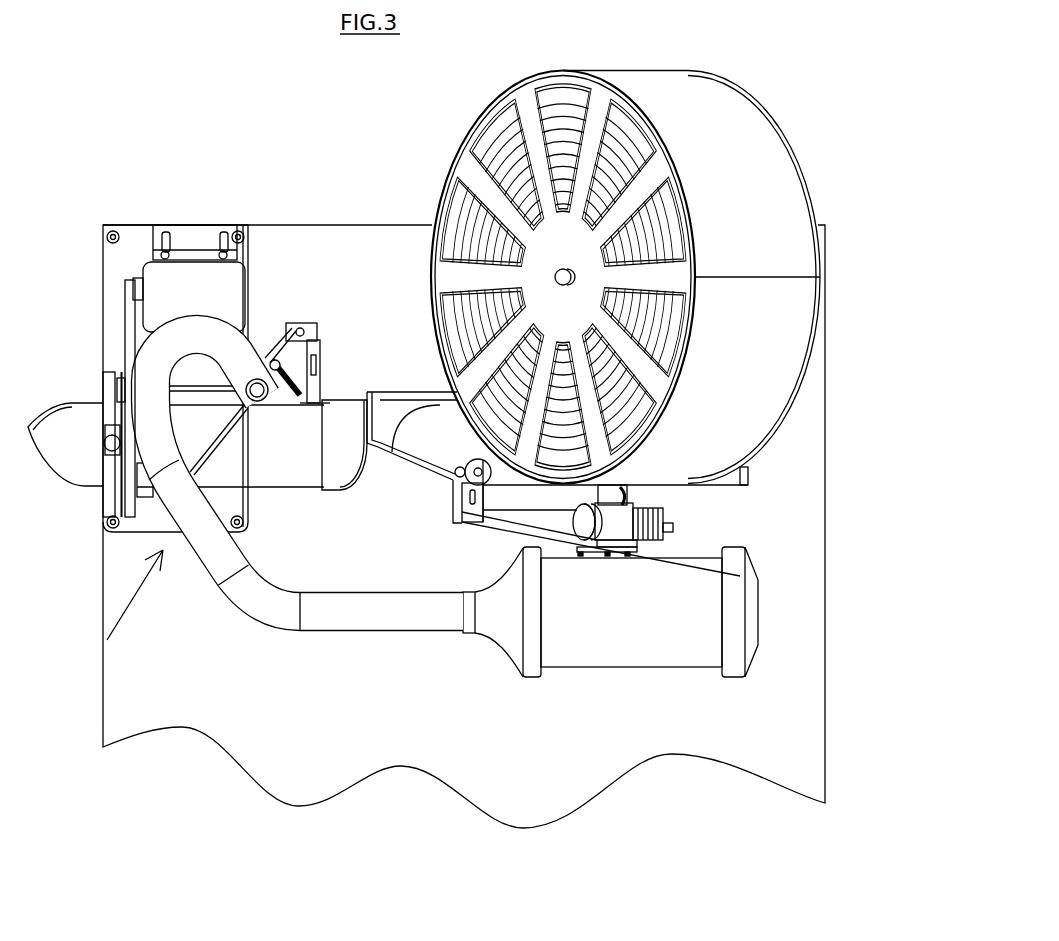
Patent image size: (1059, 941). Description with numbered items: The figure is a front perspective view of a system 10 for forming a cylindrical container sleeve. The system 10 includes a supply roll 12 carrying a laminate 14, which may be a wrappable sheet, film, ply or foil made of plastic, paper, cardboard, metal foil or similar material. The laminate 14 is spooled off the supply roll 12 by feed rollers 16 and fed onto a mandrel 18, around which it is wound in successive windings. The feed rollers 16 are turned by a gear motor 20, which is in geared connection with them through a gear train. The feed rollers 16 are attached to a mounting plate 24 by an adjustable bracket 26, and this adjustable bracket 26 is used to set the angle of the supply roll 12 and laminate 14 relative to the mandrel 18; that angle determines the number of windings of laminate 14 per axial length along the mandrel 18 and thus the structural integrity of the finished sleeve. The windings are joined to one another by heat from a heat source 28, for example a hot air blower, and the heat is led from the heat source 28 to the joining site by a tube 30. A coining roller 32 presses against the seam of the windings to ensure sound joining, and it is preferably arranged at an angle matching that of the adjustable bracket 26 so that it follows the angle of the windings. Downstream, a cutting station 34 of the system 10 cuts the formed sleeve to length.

The system 10 is at (467, 450).
The supply roll 12 is at (463, 165).
The laminate 14 is at (398, 423).
The feed rollers 16 is at (522, 496).
The mandrel 18 is at (442, 430).
The gear motor 20 is at (615, 520).
The mounting plate 24 is at (322, 283).
The adjustable bracket 26 is at (675, 525).
The heat source 28 is at (647, 648).
The tube 30 is at (341, 620).
The coining roller 32 is at (258, 368).
The cutting station 34 is at (107, 640).